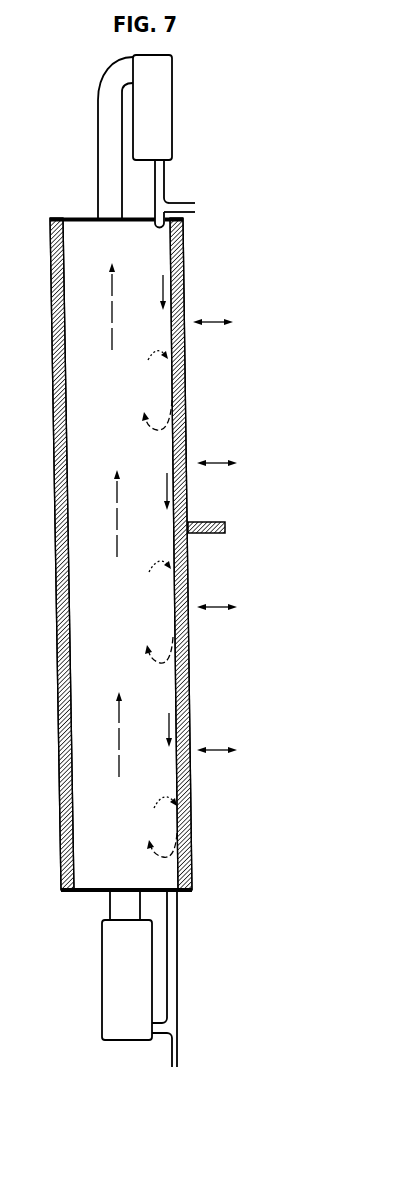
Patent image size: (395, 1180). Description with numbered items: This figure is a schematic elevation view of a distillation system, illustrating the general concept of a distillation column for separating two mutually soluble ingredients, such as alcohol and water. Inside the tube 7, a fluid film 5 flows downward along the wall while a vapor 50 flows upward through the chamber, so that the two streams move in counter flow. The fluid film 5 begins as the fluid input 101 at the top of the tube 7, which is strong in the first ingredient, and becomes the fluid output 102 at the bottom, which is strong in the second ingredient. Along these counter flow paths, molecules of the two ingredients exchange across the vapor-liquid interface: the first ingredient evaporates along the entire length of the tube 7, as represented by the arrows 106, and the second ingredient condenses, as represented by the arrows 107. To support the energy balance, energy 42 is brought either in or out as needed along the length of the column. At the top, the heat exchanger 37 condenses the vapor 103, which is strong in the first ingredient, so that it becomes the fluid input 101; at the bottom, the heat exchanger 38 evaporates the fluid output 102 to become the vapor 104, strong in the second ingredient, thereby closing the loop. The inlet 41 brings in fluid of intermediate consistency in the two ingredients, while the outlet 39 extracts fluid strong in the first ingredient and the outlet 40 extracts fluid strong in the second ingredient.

The fluid film 5 is at (67, 390).
The tube 7 is at (53, 426).
The heat exchanger 37 is at (152, 107).
The heat exchanger 38 is at (127, 980).
The outlet 39 is at (233, 220).
The outlet 40 is at (185, 1032).
The inlet 41 is at (280, 527).
The energy 42 is at (215, 526).
The vapor 50 is at (132, 520).
The fluid input 101 is at (168, 163).
The fluid output 102 is at (184, 925).
The vapor 103 is at (110, 165).
The vapor 104 is at (125, 902).
The arrows 106 is at (157, 640).
The arrows 107 is at (157, 566).